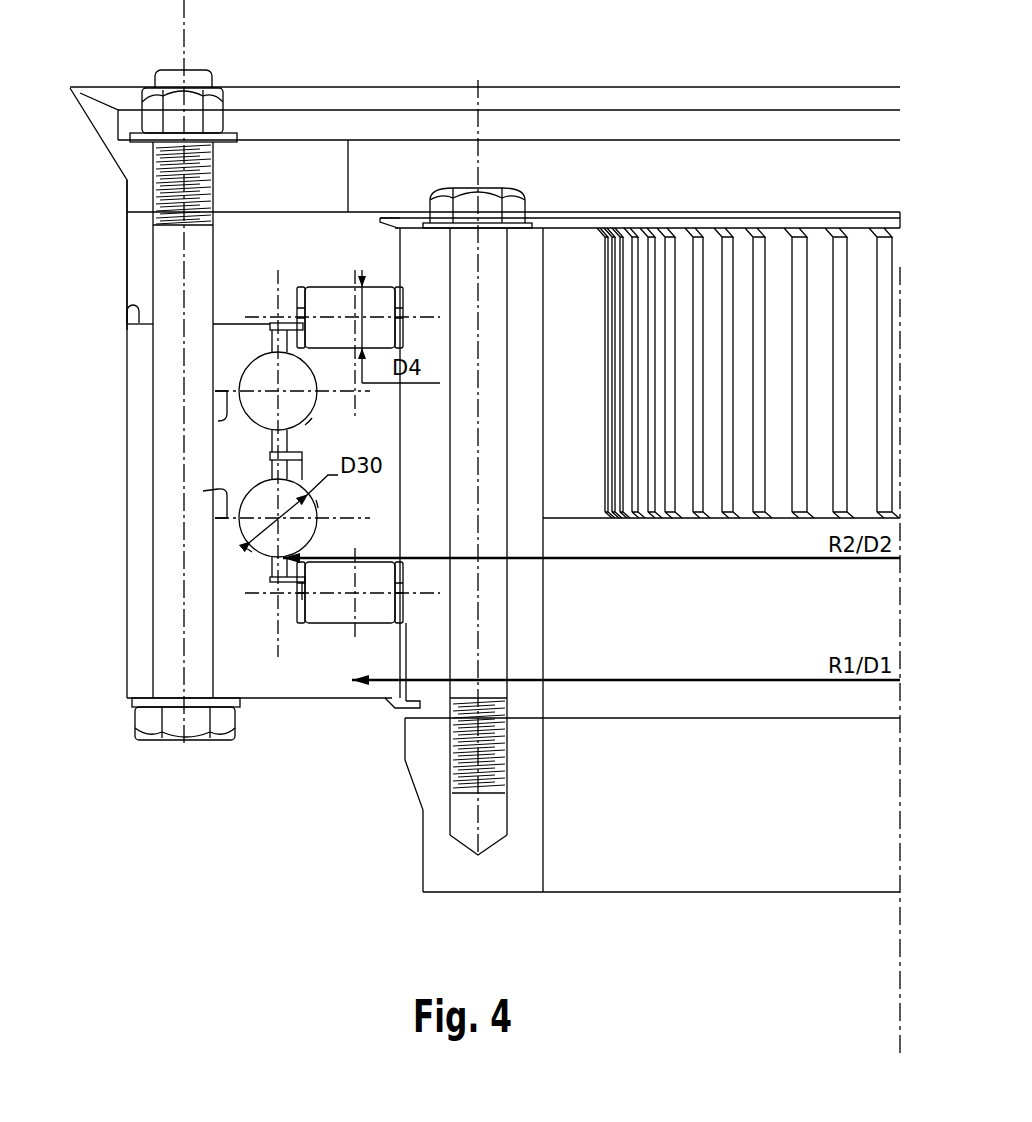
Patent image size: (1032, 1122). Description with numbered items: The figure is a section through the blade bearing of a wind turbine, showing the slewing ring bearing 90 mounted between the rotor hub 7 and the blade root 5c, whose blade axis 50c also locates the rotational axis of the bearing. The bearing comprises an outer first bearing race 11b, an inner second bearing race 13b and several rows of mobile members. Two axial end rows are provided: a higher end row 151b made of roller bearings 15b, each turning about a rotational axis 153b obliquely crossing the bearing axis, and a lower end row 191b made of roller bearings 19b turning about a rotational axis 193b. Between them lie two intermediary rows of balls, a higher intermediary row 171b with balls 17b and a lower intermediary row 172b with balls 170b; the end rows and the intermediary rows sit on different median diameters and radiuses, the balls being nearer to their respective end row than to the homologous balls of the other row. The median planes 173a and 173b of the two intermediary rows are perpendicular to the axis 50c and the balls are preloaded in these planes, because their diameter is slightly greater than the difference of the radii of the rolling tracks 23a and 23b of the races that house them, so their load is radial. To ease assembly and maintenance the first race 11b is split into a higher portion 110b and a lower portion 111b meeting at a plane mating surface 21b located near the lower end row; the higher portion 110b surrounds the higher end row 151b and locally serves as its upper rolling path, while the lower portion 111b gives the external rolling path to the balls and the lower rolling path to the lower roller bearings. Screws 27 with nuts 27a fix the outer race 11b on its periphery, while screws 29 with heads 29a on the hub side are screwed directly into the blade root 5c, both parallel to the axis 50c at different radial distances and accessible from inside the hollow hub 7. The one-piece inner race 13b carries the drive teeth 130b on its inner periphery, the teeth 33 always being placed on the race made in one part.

The rotor hub 7 is at (258, 100).
The higher portion of the first bearing race 110b is at (150, 242).
The bearing 90 is at (620, 200).
The first bearing race 11b is at (125, 580).
The lower portion of the first bearing race 111b is at (147, 662).
The mating surface 21b is at (126, 308).
The nut 27a is at (150, 102).
The screw 27 is at (170, 242).
The second bearing race 13b is at (537, 262).
The head of the fixing means 29a is at (465, 205).
The screw 29 is at (507, 760).
The roller bearing 15b is at (328, 283).
The higher end row 151b is at (378, 328).
The rotational axis of the roller bearing 153b is at (322, 317).
The roller bearing 19b is at (318, 627).
The lower end row 191b is at (387, 573).
The rotational axis of the roller bearing 193b is at (327, 596).
The ball 17b is at (240, 365).
The ball 170b is at (245, 483).
The median plane 173a is at (218, 410).
The median plane 173b is at (205, 492).
The higher intermediary row 171b is at (268, 455).
The lower intermediary row 172b is at (247, 560).
The rolling track 23a is at (243, 547).
The rolling track 23b is at (305, 425).
The teeth 130b is at (813, 270).
The drive teeth 33 is at (862, 415).
The blade root 5c is at (517, 893).
The rotational axis 50c is at (898, 967).